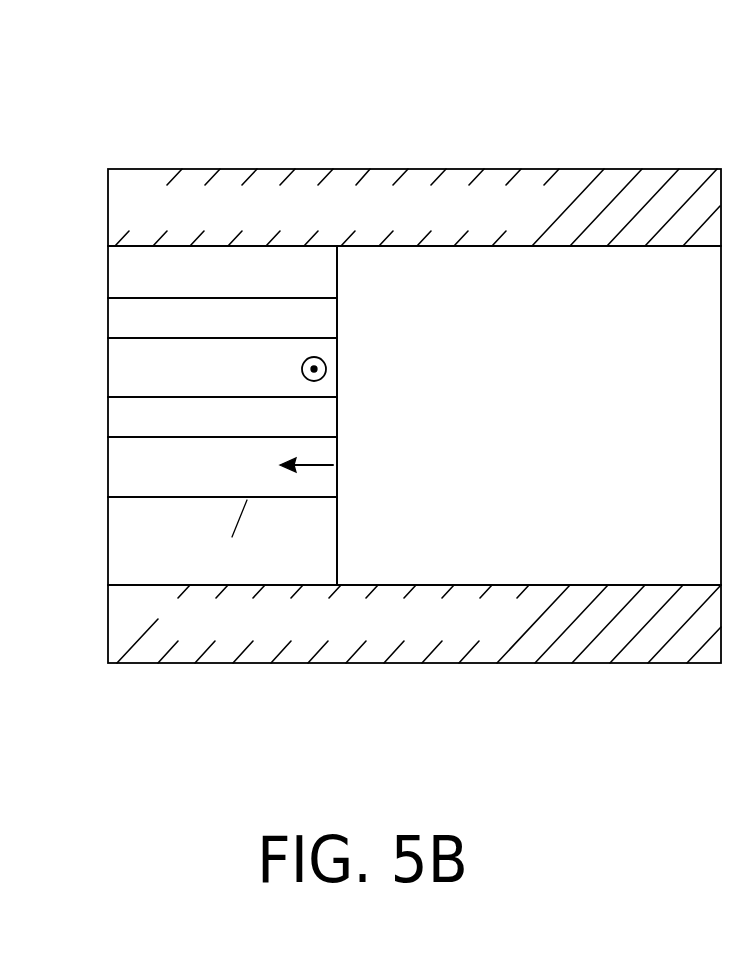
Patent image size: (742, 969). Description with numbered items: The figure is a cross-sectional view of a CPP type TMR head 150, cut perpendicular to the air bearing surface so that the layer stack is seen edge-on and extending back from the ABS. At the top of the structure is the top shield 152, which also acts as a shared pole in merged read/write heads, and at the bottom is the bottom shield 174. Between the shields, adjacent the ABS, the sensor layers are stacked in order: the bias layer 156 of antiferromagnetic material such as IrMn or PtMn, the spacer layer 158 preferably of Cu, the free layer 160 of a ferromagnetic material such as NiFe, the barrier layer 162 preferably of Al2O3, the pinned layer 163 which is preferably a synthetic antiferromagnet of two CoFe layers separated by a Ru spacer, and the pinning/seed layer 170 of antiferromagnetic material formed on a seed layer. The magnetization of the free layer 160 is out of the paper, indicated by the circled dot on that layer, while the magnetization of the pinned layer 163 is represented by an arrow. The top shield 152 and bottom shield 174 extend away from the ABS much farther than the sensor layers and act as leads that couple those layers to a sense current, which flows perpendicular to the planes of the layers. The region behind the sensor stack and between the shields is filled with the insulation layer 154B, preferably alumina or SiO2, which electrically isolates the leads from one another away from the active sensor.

The TMR head 150 is at (190, 97).
The top shield 152 is at (120, 203).
The insulation layer 154B is at (645, 429).
The bias layer 156 is at (122, 268).
The spacer layer 158 is at (122, 318).
The free layer 160 is at (122, 376).
The barrier layer 162 is at (122, 413).
The pinned layer 163 is at (120, 465).
The pinning/seed layer 170 is at (115, 518).
The bottom shield 174 is at (122, 607).